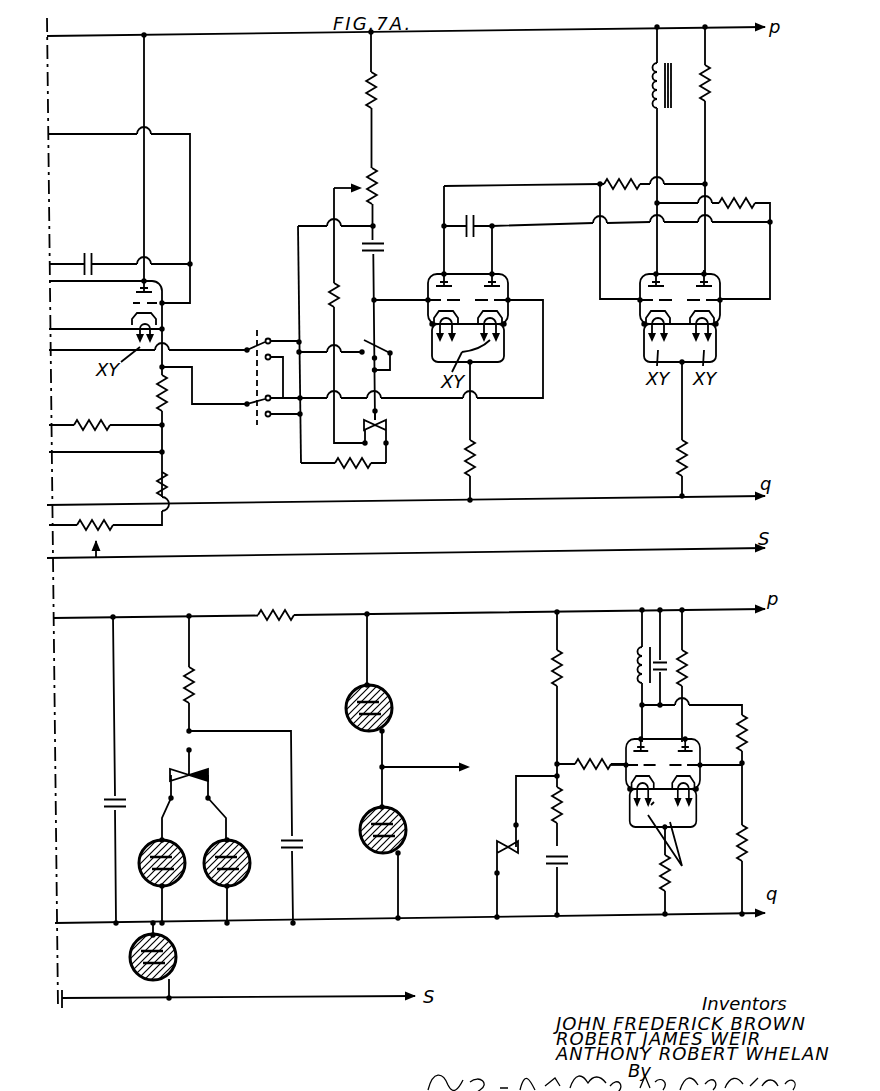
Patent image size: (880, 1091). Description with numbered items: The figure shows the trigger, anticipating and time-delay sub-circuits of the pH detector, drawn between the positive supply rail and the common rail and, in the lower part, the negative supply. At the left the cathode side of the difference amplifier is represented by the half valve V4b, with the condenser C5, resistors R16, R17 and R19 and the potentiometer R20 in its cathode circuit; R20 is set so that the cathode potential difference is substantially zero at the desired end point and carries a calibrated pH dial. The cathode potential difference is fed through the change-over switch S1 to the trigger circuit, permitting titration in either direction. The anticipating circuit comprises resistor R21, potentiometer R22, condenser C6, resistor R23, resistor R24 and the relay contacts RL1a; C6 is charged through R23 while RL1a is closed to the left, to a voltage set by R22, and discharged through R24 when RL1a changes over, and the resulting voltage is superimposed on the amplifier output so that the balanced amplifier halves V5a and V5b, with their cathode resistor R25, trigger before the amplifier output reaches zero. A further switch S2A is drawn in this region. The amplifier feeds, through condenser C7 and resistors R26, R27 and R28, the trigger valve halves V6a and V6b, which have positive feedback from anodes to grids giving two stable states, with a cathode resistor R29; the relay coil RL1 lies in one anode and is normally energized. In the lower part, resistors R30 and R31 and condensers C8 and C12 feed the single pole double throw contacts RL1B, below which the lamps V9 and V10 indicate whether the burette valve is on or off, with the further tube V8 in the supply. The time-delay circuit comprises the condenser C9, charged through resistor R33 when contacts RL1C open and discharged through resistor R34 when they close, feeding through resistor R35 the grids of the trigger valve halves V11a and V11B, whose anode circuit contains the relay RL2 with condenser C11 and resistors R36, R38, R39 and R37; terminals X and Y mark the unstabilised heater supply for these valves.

The capacitor C5 is at (121, 259).
The valve section V4b is at (163, 316).
The resistor R16 is at (159, 393).
The resistor R17 is at (95, 424).
The resistor R19 is at (143, 484).
The potentiometer R20 is at (90, 528).
The change-over switch S1 is at (270, 370).
The resistor R21 is at (392, 90).
The potentiometer R22 is at (370, 190).
The condenser C6 is at (352, 238).
The resistor R23 is at (332, 310).
The switch S2A is at (346, 343).
The relay switch contacts RL1a is at (400, 435).
The resistor R24 is at (352, 469).
The resistor R25 is at (478, 460).
The balanced amplifier valve half V5a is at (430, 325).
The balanced amplifier valve half V5b is at (513, 310).
The capacitor C7 is at (477, 221).
The resistor R26 is at (652, 194).
The relay coil RL1 is at (650, 84).
The resistor R28 is at (712, 97).
The resistor R27 is at (757, 190).
The trigger valve half V6a is at (641, 347).
The trigger valve half V6b is at (720, 348).
The resistor R29 is at (692, 453).
The resistor R31 is at (276, 605).
The capacitor C8 is at (103, 771).
The resistor R30 is at (209, 684).
The capacitor C12 is at (260, 828).
The single pole double throw switch contacts RL1B is at (214, 795).
The cold cathode tube V8 is at (140, 960).
The cold cathode tube V9 is at (384, 690).
The cold cathode tube V10 is at (401, 844).
The resistor R33 is at (538, 695).
The resistor R34 is at (578, 805).
The condenser C9 is at (567, 878).
The relay switch contacts RL1C is at (525, 848).
The resistor R35 is at (591, 755).
The relay RL2 is at (638, 670).
The capacitor C11 is at (675, 633).
The resistor R36 is at (690, 672).
The resistor R38 is at (739, 728).
The resistor R39 is at (764, 840).
The trigger valve half V11a is at (655, 796).
The trigger valve half V11B is at (712, 798).
The resistor R37 is at (647, 872).
The heater supply terminal X is at (671, 849).
The heater supply terminal Y is at (659, 799).